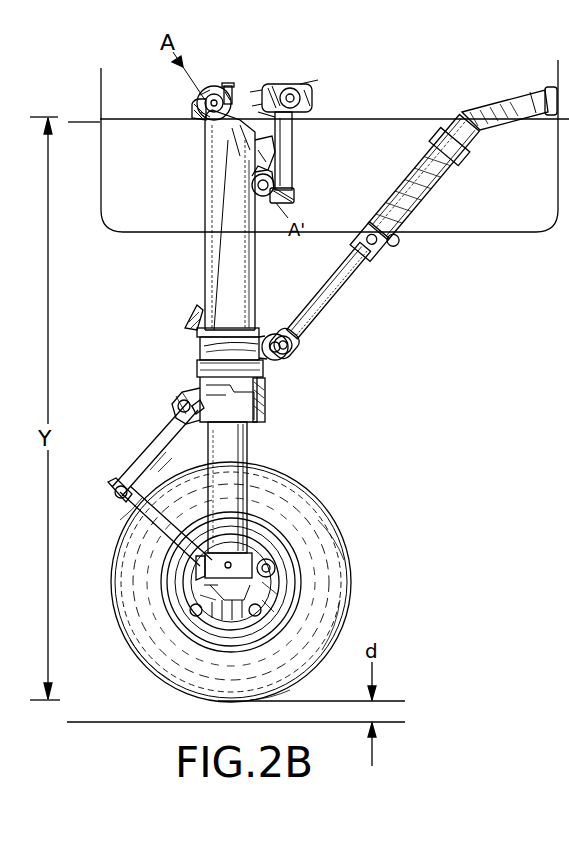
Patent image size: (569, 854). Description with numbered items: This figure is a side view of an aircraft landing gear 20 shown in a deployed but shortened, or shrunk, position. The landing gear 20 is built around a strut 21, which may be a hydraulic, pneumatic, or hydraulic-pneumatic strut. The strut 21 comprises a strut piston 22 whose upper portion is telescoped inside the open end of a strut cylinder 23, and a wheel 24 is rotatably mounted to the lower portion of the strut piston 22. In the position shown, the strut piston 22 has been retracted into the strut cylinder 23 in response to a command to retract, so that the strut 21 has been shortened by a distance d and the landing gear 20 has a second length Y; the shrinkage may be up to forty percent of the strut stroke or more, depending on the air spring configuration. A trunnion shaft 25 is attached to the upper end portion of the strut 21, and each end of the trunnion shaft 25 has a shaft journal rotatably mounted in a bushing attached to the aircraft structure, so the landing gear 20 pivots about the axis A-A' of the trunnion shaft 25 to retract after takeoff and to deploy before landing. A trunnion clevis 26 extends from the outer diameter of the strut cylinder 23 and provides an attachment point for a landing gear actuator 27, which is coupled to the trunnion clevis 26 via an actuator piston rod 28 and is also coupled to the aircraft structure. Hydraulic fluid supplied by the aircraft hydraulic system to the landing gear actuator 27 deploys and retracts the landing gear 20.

The landing gear 20 is at (190, 82).
The strut 21 is at (160, 348).
The strut piston 22 is at (162, 458).
The strut cylinder 23 is at (202, 284).
The wheel 24 is at (110, 562).
The trunnion shaft 25 is at (191, 104).
The trunnion clevis 26 is at (270, 232).
The landing gear actuator 27 is at (320, 101).
The actuator piston rod 28 is at (296, 152).